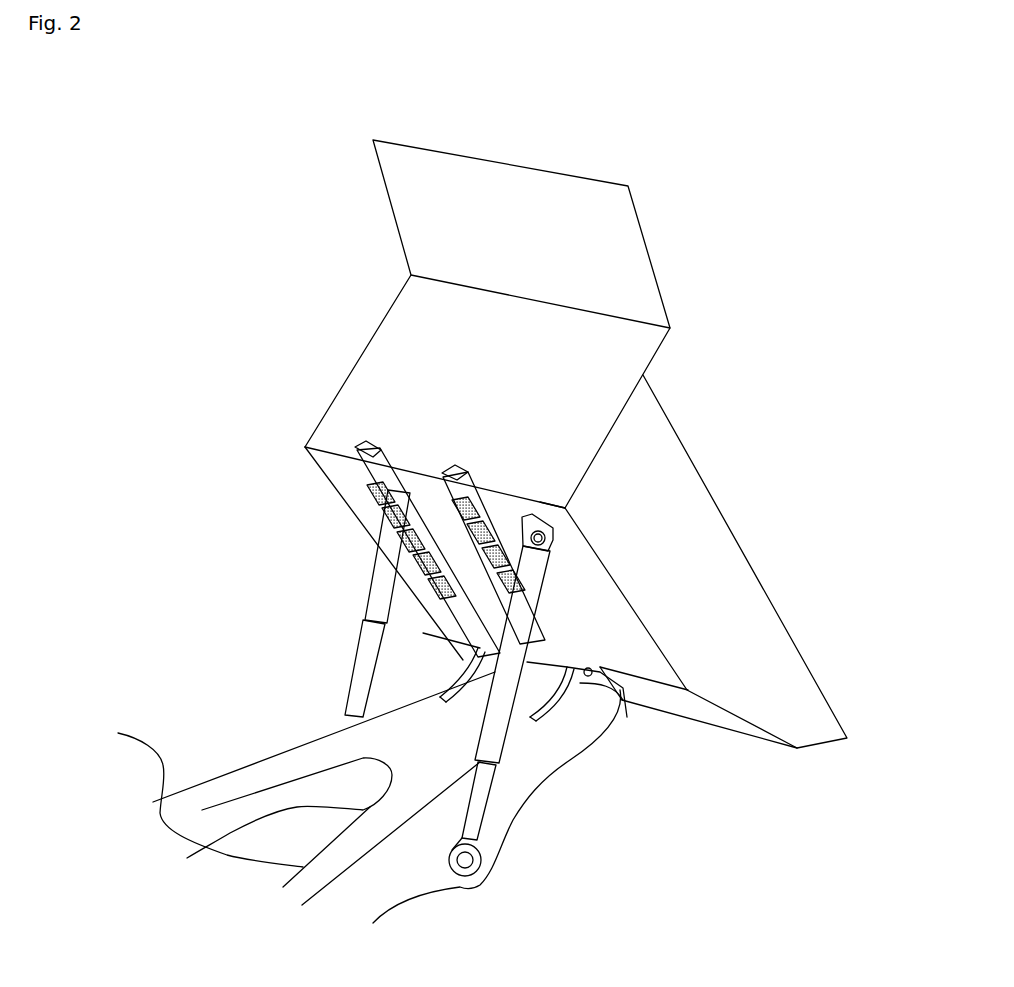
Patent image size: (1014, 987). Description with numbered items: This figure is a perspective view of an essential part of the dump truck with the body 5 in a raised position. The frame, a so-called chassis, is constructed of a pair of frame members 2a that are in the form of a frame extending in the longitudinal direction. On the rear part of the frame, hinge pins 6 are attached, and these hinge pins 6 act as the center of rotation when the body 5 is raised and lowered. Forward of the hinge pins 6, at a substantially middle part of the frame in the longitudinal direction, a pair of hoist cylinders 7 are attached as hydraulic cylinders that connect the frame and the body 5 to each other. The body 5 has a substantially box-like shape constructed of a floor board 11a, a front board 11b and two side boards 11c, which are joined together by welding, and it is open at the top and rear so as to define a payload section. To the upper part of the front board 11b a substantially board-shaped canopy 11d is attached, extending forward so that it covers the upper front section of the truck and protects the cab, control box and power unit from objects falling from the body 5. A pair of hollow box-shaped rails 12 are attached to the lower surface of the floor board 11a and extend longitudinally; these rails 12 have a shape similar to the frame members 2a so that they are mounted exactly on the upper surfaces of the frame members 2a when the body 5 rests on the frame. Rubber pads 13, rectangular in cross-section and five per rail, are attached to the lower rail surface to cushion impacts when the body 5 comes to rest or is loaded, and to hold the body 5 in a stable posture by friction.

The frame members 2a is at (250, 797).
The body 5 is at (722, 465).
The hinge pins 6 is at (622, 700).
The hoist cylinders 7 is at (478, 752).
The floor board 11a is at (632, 652).
The front board 11b is at (600, 355).
The side boards 11c is at (738, 588).
The canopy 11d is at (637, 258).
The rails 12 is at (443, 466).
The rubber pads 13 is at (437, 597).